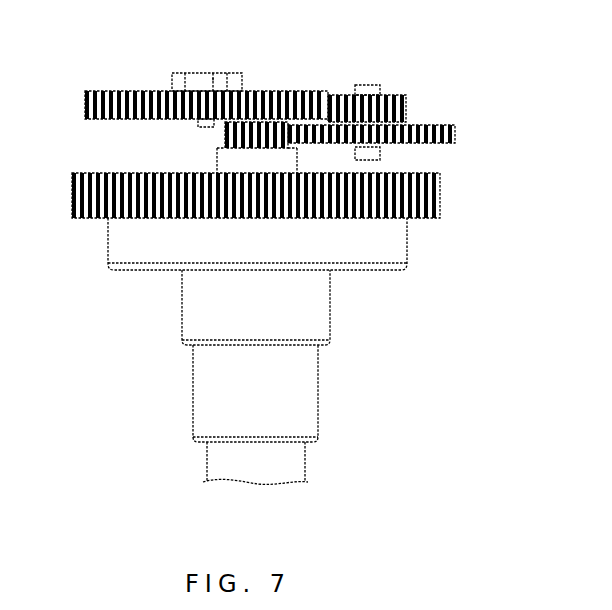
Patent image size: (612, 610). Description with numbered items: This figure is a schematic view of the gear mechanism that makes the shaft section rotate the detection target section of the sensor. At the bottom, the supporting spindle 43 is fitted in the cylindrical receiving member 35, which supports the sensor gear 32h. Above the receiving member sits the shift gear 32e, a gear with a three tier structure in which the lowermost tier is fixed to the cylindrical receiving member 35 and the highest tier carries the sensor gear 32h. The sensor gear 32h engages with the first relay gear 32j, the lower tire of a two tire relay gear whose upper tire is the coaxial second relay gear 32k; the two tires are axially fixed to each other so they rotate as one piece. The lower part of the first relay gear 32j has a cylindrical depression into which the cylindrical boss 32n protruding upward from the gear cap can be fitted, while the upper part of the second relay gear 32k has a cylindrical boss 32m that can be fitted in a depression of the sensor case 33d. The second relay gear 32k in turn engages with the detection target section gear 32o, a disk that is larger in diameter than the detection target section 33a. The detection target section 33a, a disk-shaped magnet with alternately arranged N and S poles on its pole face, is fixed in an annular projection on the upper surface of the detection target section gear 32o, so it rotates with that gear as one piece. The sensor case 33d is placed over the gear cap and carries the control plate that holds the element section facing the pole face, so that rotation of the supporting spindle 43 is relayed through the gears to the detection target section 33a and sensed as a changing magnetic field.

The detection target section gear 32o is at (104, 91).
The sensor case 33d is at (185, 73).
The detection target section 33a is at (215, 72).
The sensor gear 32h is at (272, 123).
The cylindrical boss 32m is at (357, 85).
The second relay gear 32k is at (396, 94).
The first relay gear 32j is at (445, 125).
The cylindrical boss 32n is at (380, 152).
The shift gear 32e is at (440, 195).
The cylindrical receiving member 35 is at (407, 243).
The supporting spindle 43 is at (305, 464).